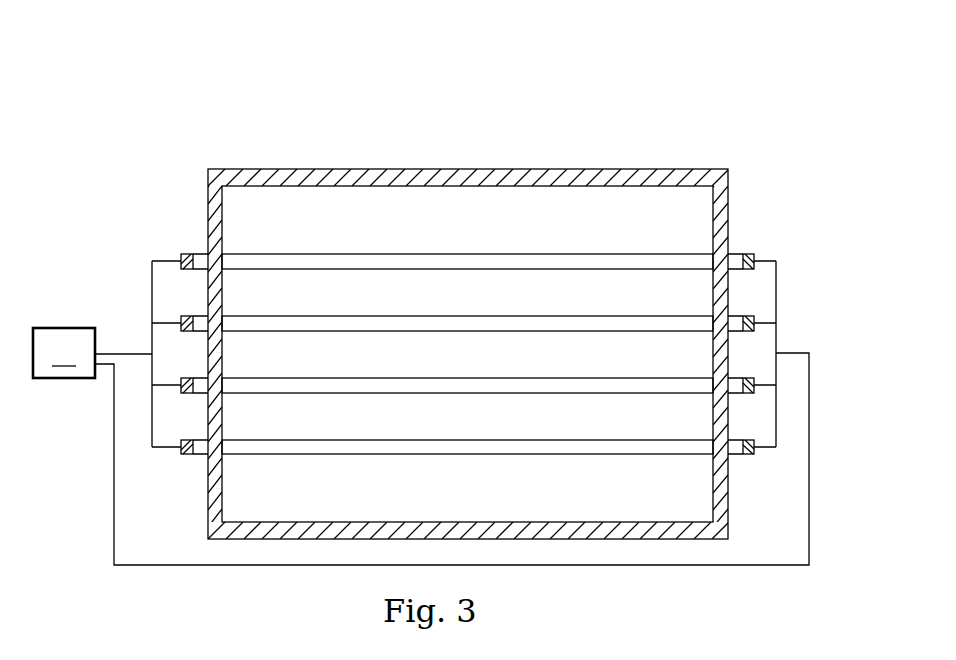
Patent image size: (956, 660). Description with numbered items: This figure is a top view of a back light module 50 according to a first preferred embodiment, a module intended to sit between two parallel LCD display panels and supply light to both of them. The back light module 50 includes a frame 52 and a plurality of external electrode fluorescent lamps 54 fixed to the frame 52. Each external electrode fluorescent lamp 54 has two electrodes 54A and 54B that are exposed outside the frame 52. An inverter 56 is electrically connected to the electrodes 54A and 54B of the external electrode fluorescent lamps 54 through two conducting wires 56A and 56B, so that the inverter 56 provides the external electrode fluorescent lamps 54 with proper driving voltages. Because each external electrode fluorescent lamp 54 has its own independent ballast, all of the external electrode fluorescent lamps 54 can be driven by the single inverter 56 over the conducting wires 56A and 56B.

The back light module 50 is at (833, 118).
The frame 52 is at (238, 168).
The external electrode fluorescent lamps 54 is at (396, 254).
The electrode 54A is at (184, 256).
The electrode 54B is at (749, 254).
The inverter 56 is at (64, 353).
The conducting wire 56A is at (120, 352).
The conducting wire 56B is at (114, 457).